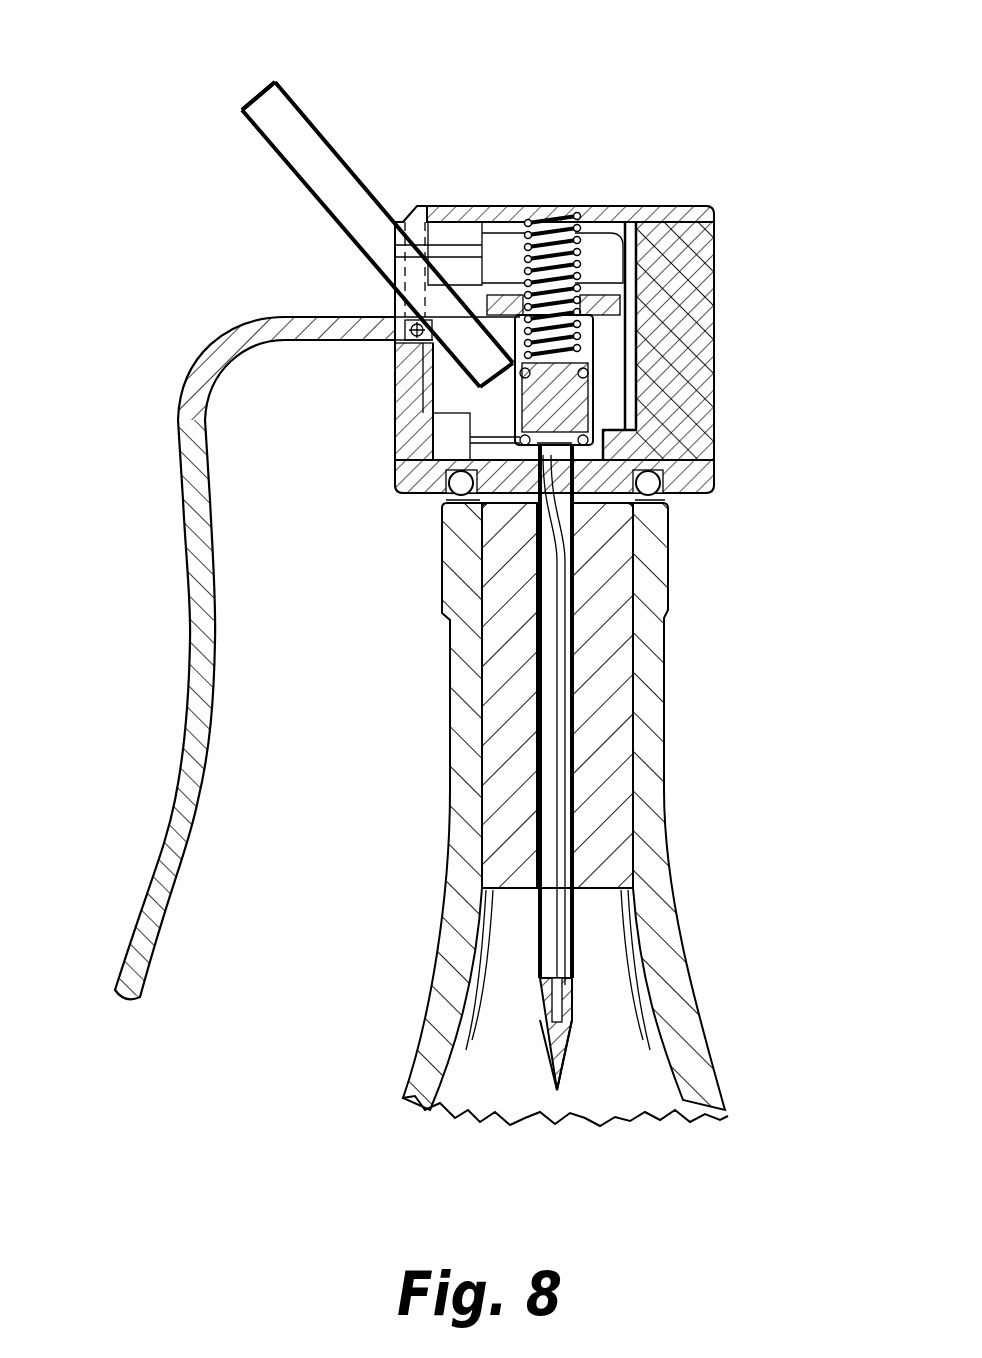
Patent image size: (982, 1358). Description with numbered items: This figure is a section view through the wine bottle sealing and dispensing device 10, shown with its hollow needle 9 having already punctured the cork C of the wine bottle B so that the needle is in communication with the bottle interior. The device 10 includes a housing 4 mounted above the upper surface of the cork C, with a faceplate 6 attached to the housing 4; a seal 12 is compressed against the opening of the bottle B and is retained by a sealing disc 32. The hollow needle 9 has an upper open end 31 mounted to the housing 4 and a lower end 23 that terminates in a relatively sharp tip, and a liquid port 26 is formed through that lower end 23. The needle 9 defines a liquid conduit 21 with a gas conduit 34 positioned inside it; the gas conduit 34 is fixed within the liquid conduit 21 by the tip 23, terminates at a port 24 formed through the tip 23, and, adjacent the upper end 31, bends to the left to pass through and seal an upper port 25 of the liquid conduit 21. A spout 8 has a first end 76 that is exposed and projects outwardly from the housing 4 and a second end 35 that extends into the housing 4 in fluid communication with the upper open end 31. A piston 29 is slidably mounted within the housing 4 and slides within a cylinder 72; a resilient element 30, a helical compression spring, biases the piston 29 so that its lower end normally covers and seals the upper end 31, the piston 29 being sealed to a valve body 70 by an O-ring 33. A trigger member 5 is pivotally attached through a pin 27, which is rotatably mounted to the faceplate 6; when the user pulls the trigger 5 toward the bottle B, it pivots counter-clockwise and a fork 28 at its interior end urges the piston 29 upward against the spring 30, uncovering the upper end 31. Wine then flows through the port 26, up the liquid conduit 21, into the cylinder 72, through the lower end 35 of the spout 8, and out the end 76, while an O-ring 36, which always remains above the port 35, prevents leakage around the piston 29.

The housing 4 is at (500, 207).
The trigger member 5 is at (190, 640).
The faceplate 6 is at (408, 490).
The spout 8 is at (270, 132).
The hollow needle 9 is at (571, 695).
The wine bottle sealing and dispensing device 10 is at (703, 163).
The seal 12 is at (450, 497).
The liquid conduit 21 is at (568, 745).
The lower end 23 is at (568, 1050).
The port 24 is at (573, 1020).
The upper port 25 is at (603, 450).
The liquid port 26 is at (535, 925).
The pin 27 is at (395, 320).
The fork 28 is at (470, 298).
The piston 29 is at (628, 270).
The resilient element 30 is at (615, 230).
The upper open end 31 is at (590, 410).
The sealing disc 32 is at (640, 528).
The O-ring 33 is at (520, 438).
The gas conduit 34 is at (568, 855).
The second end 35 is at (523, 400).
The O-ring 36 is at (587, 377).
The valve body 70 is at (422, 445).
The cylinder 72 is at (600, 290).
The first end 76 is at (268, 105).
The wine bottle B is at (657, 583).
The cork C is at (610, 660).